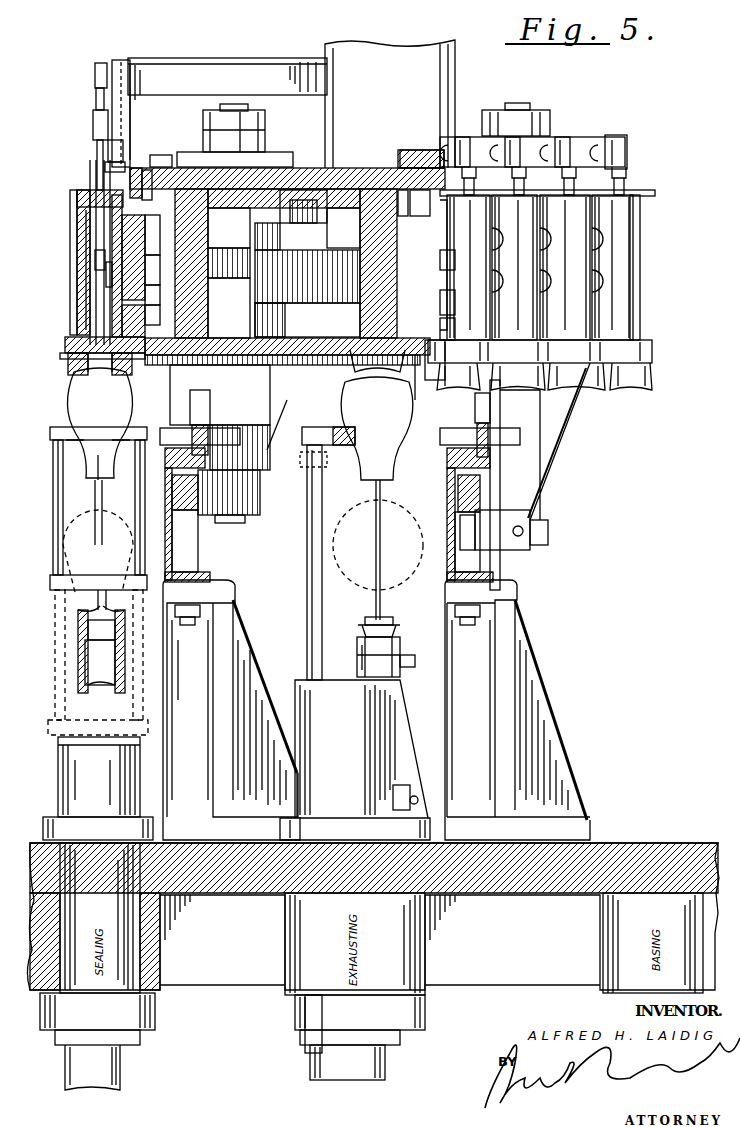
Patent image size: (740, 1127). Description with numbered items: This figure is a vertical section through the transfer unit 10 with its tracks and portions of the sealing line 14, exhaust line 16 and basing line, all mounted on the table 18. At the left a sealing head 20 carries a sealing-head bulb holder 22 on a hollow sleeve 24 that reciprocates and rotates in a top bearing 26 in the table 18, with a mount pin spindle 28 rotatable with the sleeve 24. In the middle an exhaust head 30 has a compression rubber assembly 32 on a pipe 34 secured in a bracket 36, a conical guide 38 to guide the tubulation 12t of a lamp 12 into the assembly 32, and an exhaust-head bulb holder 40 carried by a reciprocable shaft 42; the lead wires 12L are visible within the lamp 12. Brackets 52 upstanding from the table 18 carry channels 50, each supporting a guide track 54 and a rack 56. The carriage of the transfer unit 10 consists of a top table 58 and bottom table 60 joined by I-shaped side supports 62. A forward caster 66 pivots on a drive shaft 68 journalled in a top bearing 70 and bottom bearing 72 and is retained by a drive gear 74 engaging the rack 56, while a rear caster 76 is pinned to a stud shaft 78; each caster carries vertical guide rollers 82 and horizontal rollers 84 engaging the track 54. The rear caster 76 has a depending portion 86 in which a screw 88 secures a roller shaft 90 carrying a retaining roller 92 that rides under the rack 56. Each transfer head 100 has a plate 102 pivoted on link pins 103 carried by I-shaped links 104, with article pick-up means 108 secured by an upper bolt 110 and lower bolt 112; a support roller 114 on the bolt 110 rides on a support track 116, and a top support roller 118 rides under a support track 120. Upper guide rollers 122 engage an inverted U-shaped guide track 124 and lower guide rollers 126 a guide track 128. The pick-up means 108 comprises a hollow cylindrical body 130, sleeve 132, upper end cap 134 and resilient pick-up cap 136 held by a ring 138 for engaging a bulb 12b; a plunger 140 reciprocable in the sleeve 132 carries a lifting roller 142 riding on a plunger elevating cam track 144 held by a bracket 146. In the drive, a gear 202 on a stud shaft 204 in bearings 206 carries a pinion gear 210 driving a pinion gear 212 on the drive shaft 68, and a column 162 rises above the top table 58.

The transfer unit 10 is at (589, 114).
The lamp 12 is at (70, 397).
The bulb 12b is at (123, 436).
The lead wires 12L is at (98, 457).
The tubulation 12t is at (97, 517).
The sealing line 14 is at (121, 1073).
The exhaust line 16 is at (350, 1065).
The table 18 is at (522, 896).
The sealing head 20 is at (47, 438).
The sealing-head bulb holder 22 is at (88, 640).
The hollow sleeve 24 is at (78, 610).
The top bearing 26 is at (120, 770).
The mount pin spindle 28 is at (105, 679).
The exhaust head 30 is at (408, 712).
The compression rubber assembly 32 is at (388, 660).
The pipe 34 is at (408, 1042).
The bracket 36 is at (400, 782).
The conical guide 38 is at (362, 636).
The exhaust-head bulb holder 40 is at (300, 561).
The shaft 42 is at (307, 634).
The track supporting channel 50 is at (172, 498).
The bracket 52 is at (256, 692).
The guide track 54 is at (208, 440).
The rack 56 is at (184, 510).
The top table 58 is at (349, 150).
The bottom table 60 is at (322, 364).
The side support 62 is at (178, 157).
The forward caster 66 is at (270, 468).
The drive shaft 68 is at (220, 109).
The top bearing 70 is at (275, 154).
The bottom bearing 72 is at (222, 360).
The drive gear 74 is at (260, 515).
The rear caster 76 is at (535, 447).
The stud shaft 78 is at (515, 106).
The vertical guide roller 82 is at (190, 397).
The horizontal roller 84 is at (169, 434).
The depending portion 86 is at (522, 540).
The screw 88 is at (522, 528).
The roller shaft 90 is at (495, 553).
The retaining roller 92 is at (462, 524).
The transfer head 100 is at (66, 172).
The plate 102 is at (96, 242).
The link pin 103 is at (95, 257).
The I-shaped link 104 is at (90, 212).
The article pick-up means 108 is at (77, 197).
The upper bolt 110 is at (112, 227).
The lower bolt 112 is at (145, 288).
The support roller 114 is at (284, 228).
The support track 116 is at (342, 293).
The top support roller 118 is at (108, 178).
The support track 120 is at (110, 146).
The upper guide roller 122 is at (133, 168).
The guide track 124 is at (154, 168).
The lower guide roller 126 is at (145, 332).
The guide track 128 is at (65, 345).
The hollow cylindrical body 130 is at (145, 303).
The sleeve 132 is at (145, 317).
The upper end cap 134 is at (72, 188).
The pick-up cap 136 is at (68, 376).
The ring 138 is at (60, 358).
The plunger 140 is at (106, 272).
The lifting roller 142 is at (101, 62).
The plunger elevating cam track 144 is at (118, 70).
The bracket 146 is at (130, 95).
The column 162 is at (414, 44).
The gear 202 is at (307, 320).
The stud shaft 204 is at (334, 162).
The bearings 206 is at (282, 226).
The pinion gear 210 is at (307, 269).
The pinion gear 212 is at (303, 206).